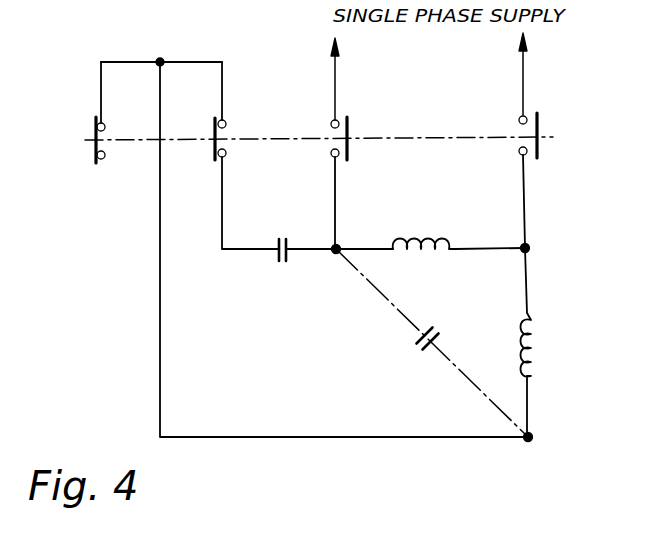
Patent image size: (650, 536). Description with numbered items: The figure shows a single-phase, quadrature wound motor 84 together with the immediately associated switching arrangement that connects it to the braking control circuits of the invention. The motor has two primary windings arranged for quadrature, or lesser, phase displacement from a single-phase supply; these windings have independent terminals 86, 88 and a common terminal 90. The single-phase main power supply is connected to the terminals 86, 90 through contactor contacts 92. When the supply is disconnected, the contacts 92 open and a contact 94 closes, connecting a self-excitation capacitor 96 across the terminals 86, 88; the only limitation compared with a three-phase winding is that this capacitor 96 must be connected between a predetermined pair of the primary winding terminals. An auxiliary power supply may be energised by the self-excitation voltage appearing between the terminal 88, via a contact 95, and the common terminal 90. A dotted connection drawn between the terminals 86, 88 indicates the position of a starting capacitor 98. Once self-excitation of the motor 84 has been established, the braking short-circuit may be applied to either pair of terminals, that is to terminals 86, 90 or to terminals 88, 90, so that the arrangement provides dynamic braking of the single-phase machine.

The quadrature wound motor 84 is at (545, 344).
The independent terminal 86 is at (339, 246).
The independent terminal 88 is at (533, 434).
The common terminal 90 is at (528, 244).
The contactor contacts 92 is at (349, 127).
The contact 94 is at (215, 125).
The contact 95 is at (96, 127).
The capacitor 96 is at (278, 247).
The starting capacitor 98 is at (429, 328).